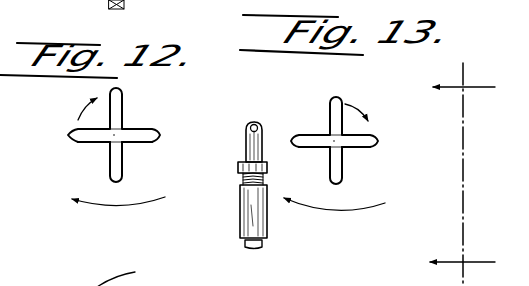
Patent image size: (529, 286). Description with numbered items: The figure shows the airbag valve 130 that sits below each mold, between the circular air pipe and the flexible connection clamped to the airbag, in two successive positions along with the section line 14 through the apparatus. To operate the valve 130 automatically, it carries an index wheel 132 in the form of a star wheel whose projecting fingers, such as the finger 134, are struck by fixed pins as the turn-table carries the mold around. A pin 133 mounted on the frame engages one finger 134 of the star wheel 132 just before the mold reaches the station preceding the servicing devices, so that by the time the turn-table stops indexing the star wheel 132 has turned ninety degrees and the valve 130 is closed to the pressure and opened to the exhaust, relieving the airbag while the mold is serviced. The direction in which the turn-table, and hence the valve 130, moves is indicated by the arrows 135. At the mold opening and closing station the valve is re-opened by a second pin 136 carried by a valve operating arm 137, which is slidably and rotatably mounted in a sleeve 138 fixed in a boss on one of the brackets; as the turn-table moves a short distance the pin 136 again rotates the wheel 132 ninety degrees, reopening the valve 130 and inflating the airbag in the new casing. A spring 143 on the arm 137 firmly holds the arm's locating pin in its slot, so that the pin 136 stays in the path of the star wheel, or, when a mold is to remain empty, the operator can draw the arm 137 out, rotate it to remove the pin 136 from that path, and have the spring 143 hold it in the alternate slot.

In FIG. 13, the section line 14- 14 is at (467, 173).
In FIG. 12, the valve 130 is at (132, 276).
In FIG. 12, the index wheel 132 is at (103, 138).
In FIG. 13, the index wheel 132 is at (326, 145).
In FIG. 12, the pin 133 is at (135, 122).
In FIG. 13, the pin 133 is at (334, 140).
In FIG. 12, the finger 134 is at (115, 168).
In FIG. 13, the finger 134 is at (340, 179).
In FIG. 12, the arrows 135 is at (125, 205).
In FIG. 13, the arrows 135 is at (341, 208).
In FIG. 13, the pin 136 is at (257, 125).
In FIG. 13, the arm 137 is at (262, 158).
In FIG. 13, the sleeve 138 is at (263, 225).
In FIG. 13, the spring 143 is at (240, 184).